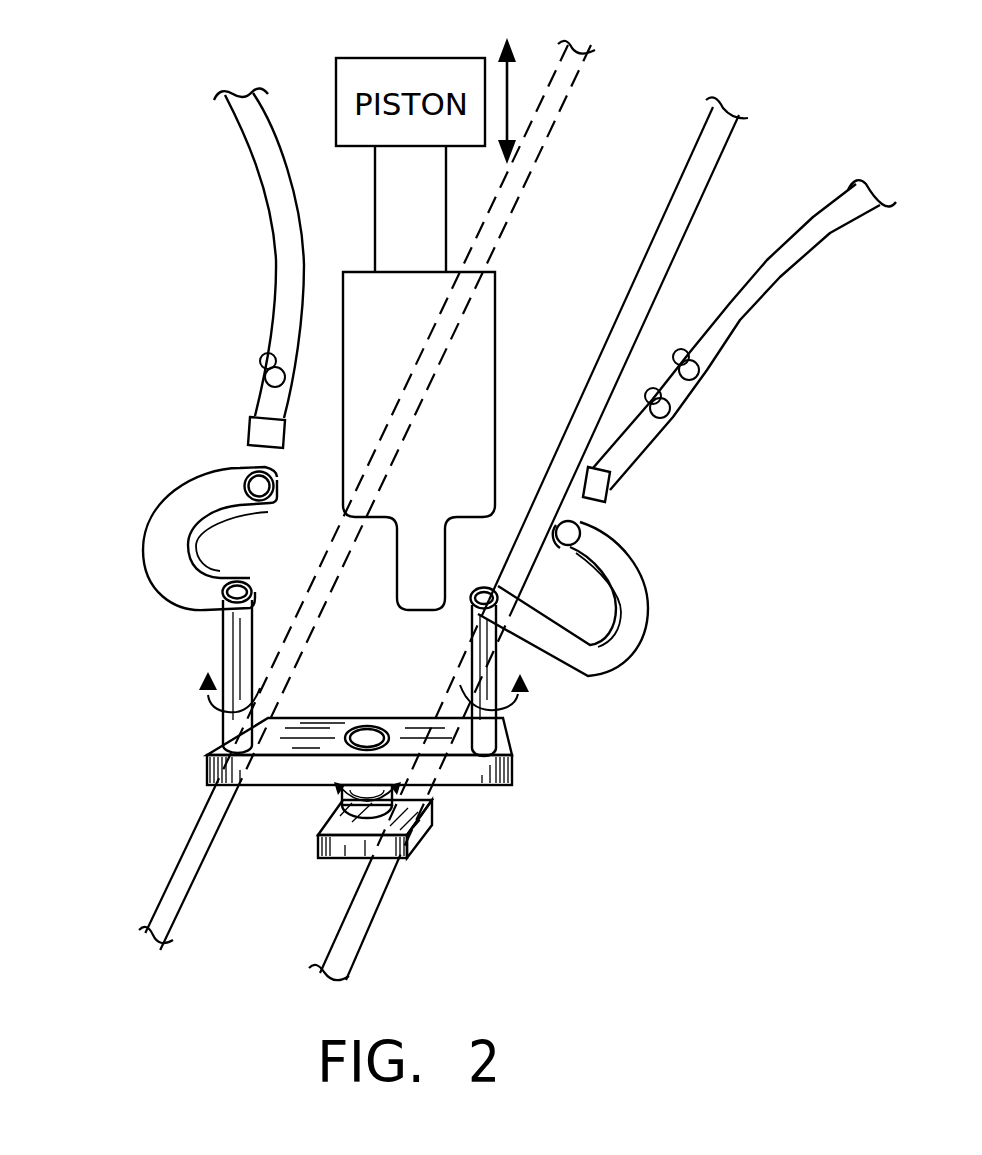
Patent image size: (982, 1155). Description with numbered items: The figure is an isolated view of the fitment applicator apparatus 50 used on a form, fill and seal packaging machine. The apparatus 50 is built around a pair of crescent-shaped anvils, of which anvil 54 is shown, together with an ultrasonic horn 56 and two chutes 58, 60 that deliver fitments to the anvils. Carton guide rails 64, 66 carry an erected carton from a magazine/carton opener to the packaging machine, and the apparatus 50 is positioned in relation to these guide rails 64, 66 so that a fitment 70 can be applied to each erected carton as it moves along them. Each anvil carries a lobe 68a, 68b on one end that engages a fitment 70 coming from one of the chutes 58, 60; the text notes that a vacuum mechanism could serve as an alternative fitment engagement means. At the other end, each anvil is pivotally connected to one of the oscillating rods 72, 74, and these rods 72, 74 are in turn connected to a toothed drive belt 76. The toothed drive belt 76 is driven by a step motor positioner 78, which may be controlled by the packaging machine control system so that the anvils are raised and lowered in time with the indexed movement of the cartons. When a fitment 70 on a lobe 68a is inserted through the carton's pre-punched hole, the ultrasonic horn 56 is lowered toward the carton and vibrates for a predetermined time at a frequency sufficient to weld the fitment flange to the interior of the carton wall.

The fitment applicator apparatus 50 is at (130, 383).
The anvil 54 is at (160, 502).
The ultrasonic horn 56 is at (419, 441).
The chute 58 is at (767, 283).
The chute 60 is at (270, 237).
The carton guide rail 64 is at (362, 923).
The carton guide rail 66 is at (197, 858).
The lobe 68a is at (580, 527).
The lobe 68b is at (283, 477).
The fitment 70 is at (262, 357).
The oscillating rod 72 is at (493, 664).
The oscillating rod 74 is at (228, 652).
The toothed drive belt 76 is at (513, 770).
The step motor positioner 78 is at (423, 832).